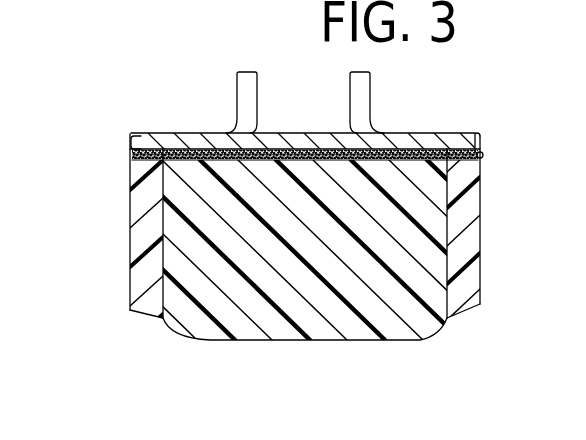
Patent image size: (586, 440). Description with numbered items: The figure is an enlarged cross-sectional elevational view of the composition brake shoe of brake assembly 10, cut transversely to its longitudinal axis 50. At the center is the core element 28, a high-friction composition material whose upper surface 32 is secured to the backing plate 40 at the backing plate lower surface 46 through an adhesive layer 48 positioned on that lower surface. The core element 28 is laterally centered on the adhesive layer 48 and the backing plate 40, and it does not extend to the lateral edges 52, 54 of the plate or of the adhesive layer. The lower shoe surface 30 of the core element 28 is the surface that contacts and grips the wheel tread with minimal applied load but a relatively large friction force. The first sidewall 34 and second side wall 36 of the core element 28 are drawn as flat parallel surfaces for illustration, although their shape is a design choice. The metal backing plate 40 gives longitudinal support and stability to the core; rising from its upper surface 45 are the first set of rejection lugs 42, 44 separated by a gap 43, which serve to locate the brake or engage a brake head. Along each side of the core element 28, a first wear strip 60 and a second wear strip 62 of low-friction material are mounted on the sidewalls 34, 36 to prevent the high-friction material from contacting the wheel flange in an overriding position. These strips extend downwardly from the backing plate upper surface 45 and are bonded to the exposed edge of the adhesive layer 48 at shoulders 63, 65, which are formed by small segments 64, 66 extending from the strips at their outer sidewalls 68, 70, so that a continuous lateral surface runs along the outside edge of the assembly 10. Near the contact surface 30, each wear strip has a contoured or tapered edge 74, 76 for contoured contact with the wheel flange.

The brake assembly 10 is at (525, 136).
The core element 28 is at (277, 327).
The shoe surface 30 is at (343, 340).
The upper surface 32 is at (193, 160).
The first sidewall 34 is at (166, 283).
The second side wall 36 is at (447, 275).
The backing plate 40 is at (157, 136).
The rejection lug 42 is at (258, 98).
The gap 43 is at (304, 107).
The rejection lug 44 is at (372, 98).
The upper surface 45 is at (200, 134).
The backing plate lower surface 46 is at (426, 160).
The adhesive layer 48 is at (482, 156).
The longitudinal axis 50 is at (72, 0).
The lateral edge 52 is at (147, 137).
The lateral edge 54 is at (470, 142).
The first wear strip 60 is at (118, 305).
The second wear strip 62 is at (494, 303).
The shoulder 63 is at (143, 162).
The small segment 64 is at (132, 154).
The shoulder 65 is at (462, 163).
The small segment 66 is at (483, 146).
The outer sidewall 68 is at (129, 242).
The outer sidewall 70 is at (482, 238).
The tapered edge 74 is at (147, 317).
The tapered edge 76 is at (461, 308).